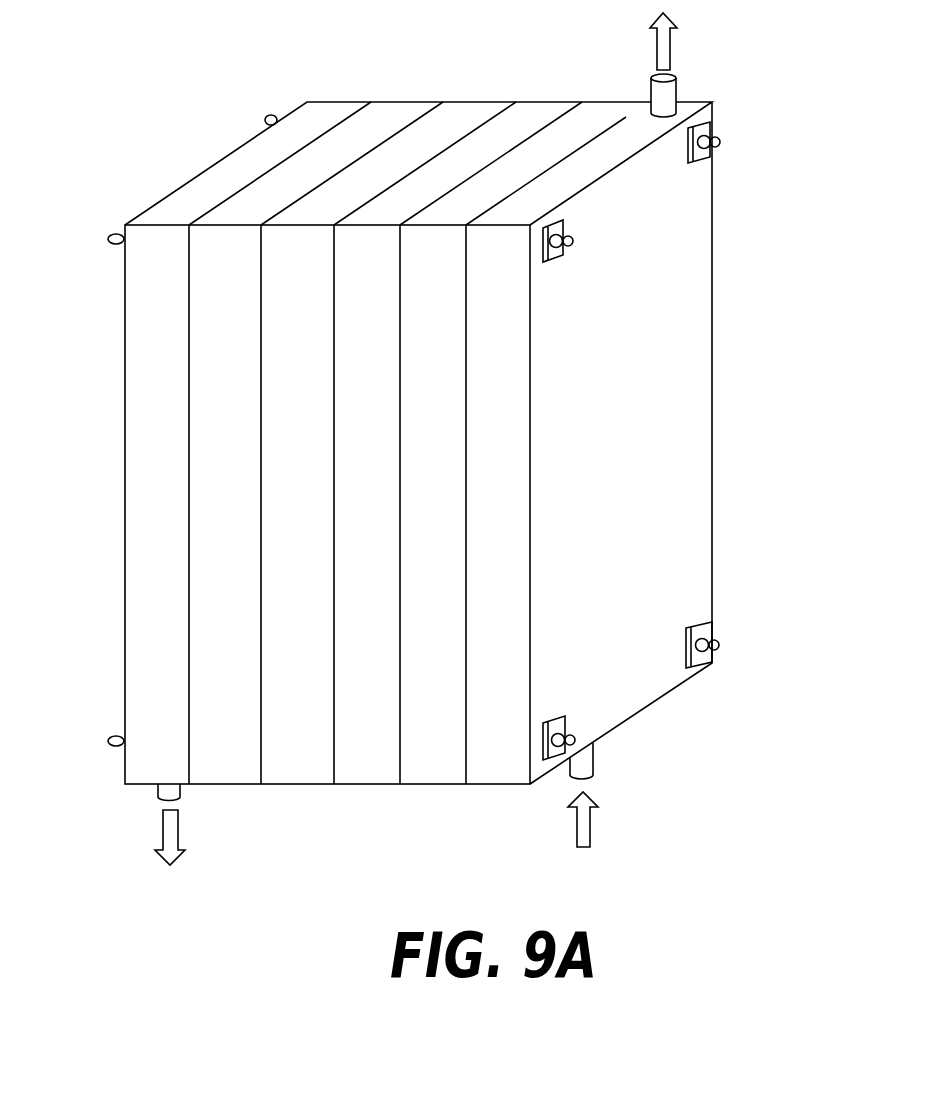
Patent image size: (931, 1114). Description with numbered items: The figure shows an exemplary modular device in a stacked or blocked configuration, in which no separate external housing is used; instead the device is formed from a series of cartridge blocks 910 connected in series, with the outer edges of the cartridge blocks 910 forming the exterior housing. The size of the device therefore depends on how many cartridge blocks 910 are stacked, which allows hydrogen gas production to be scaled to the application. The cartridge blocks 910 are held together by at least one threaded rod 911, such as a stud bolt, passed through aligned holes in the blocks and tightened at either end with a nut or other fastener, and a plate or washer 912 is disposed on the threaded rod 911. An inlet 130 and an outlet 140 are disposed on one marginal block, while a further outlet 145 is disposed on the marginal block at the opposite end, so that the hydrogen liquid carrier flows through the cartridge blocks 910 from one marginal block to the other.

The cartridge block 910 is at (383, 112).
The threaded rod 911 is at (720, 140).
The plate or washer 912 is at (700, 628).
The outlet 140 is at (651, 93).
The inlet 130 is at (596, 770).
The outlet 145 is at (183, 788).